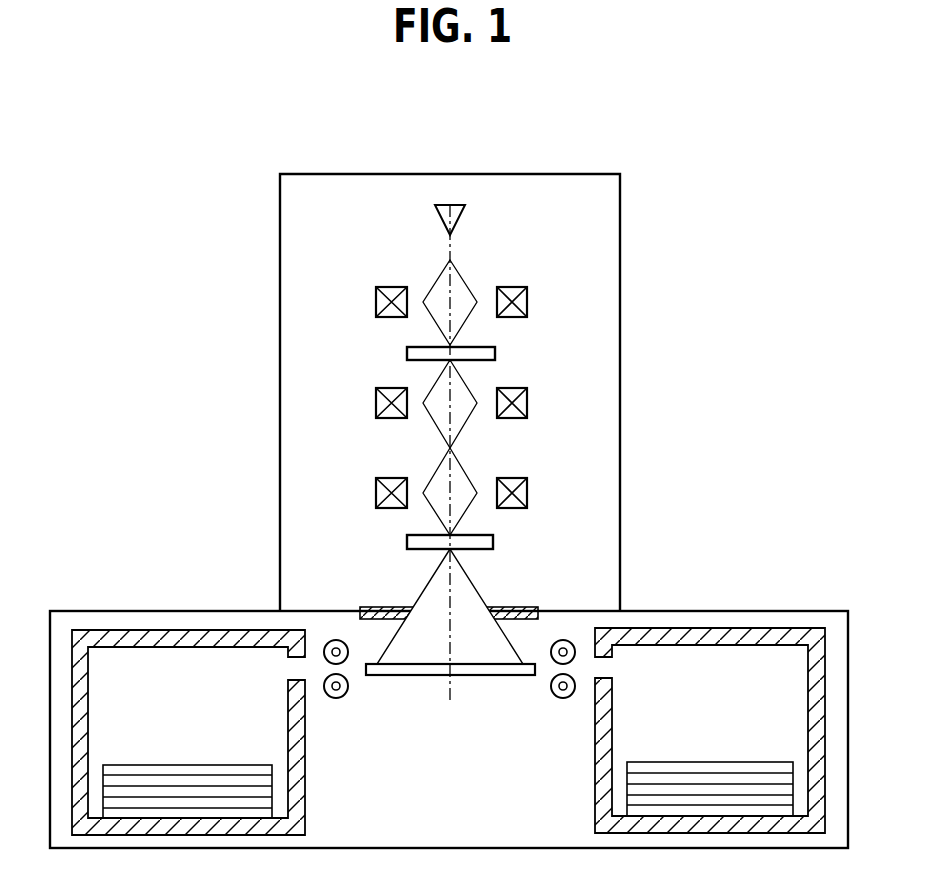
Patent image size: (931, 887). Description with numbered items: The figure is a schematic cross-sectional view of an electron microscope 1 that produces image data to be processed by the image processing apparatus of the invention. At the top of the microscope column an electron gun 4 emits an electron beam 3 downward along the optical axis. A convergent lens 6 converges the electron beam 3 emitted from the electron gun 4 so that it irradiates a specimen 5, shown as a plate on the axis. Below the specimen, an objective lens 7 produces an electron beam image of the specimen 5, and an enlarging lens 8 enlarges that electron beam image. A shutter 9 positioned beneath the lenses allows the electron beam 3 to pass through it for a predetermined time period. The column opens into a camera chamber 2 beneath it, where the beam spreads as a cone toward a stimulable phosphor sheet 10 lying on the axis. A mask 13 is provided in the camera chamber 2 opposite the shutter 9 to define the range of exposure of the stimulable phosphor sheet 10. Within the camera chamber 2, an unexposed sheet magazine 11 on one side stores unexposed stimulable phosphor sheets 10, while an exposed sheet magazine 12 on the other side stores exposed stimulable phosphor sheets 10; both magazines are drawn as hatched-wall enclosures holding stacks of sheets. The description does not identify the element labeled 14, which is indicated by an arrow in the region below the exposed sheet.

The electron microscope 1 is at (670, 318).
The camera chamber 2 is at (750, 605).
The electron beam 3 is at (434, 281).
The electron gun 4 is at (460, 212).
The specimen 5 is at (422, 351).
The convergent lens 6 is at (523, 299).
The objective lens 7 is at (530, 402).
The enlarging lens 8 is at (531, 495).
The shutter 9 is at (478, 541).
The stimulable phosphor sheet 10 is at (488, 670).
The unexposed sheet magazine 11 is at (590, 773).
The exposed sheet magazine 12 is at (312, 773).
The mask 13 is at (517, 605).
The wafer stage 14 is at (422, 695).